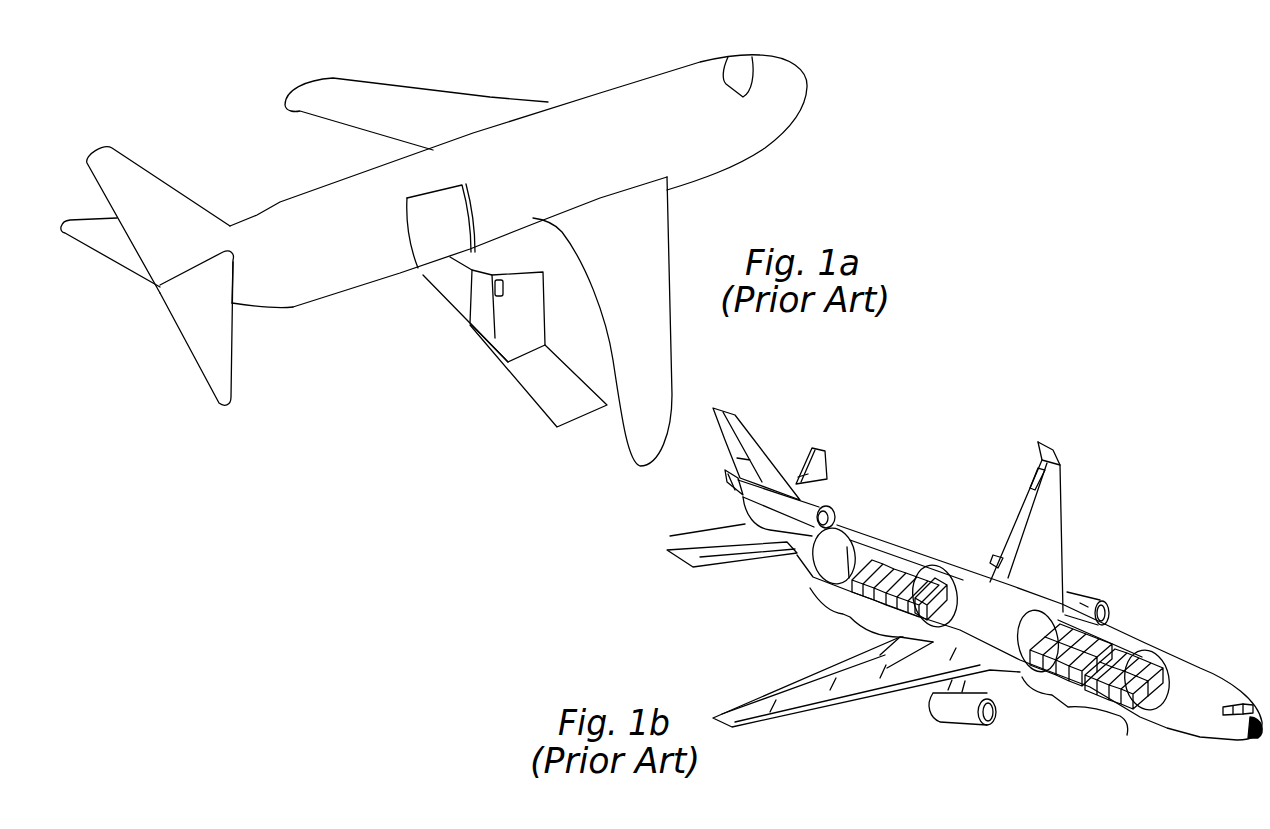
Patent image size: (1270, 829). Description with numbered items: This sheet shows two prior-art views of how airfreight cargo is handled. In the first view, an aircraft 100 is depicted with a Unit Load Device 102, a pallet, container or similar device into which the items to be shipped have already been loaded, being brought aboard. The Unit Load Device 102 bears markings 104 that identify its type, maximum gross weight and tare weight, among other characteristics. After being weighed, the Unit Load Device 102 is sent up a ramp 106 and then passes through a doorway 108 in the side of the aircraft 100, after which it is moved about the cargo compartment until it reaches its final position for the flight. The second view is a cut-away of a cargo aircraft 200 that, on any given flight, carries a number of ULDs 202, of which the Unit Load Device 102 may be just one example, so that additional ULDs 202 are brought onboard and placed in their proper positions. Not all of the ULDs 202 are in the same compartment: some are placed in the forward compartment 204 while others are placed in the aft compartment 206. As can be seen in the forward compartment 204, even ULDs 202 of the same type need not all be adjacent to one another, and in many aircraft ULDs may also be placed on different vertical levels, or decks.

In FIG. 1A, the aircraft 100 is at (622, 77).
In FIG. 1A, the Unit Load Device 102 is at (507, 338).
In FIG. 1A, the markings 104 is at (495, 288).
In FIG. 1A, the ramp 106 is at (547, 392).
In FIG. 1A, the doorway 108 is at (430, 258).
In FIG. 1B, the cargo aircraft 200 is at (1218, 672).
In FIG. 1B, the ULDs 202 is at (885, 570).
In FIG. 1B, the forward compartment 204 is at (1093, 674).
In FIG. 1B, the aft compartment 206 is at (885, 587).